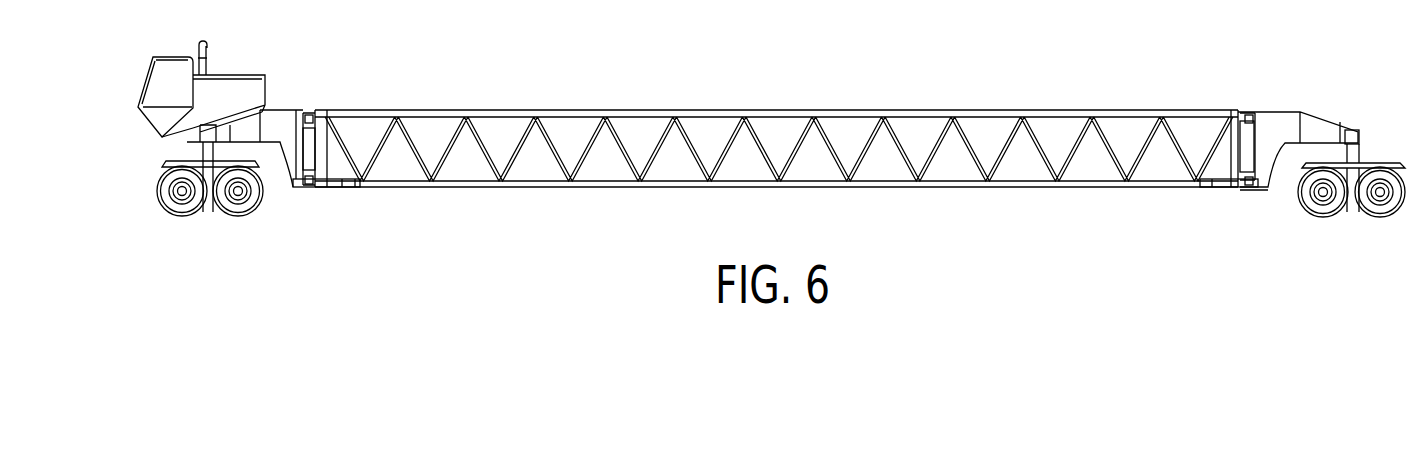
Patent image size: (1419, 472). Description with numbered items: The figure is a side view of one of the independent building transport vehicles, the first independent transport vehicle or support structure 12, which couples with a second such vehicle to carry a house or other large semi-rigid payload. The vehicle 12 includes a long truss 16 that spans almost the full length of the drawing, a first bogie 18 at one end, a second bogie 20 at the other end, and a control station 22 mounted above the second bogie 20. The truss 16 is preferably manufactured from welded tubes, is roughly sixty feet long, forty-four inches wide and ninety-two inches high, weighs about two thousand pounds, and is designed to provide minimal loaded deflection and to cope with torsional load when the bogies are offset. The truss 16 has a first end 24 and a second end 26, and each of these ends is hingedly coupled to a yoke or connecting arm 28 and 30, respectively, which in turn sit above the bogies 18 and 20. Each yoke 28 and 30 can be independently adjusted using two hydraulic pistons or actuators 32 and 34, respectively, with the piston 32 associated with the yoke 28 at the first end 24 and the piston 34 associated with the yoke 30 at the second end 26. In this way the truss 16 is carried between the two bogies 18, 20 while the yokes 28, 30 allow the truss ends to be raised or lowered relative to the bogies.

The first independent transport vehicle 12 is at (752, 109).
The truss 16 is at (843, 110).
The first bogie 18 is at (1383, 218).
The second bogie 20 is at (239, 216).
The control station 22 is at (245, 74).
The first end 24 is at (1350, 130).
The second end 26 is at (266, 113).
The yoke 28 is at (1290, 117).
The yoke 30 is at (300, 118).
The hydraulic piston 32 is at (1228, 187).
The hydraulic piston 34 is at (331, 187).